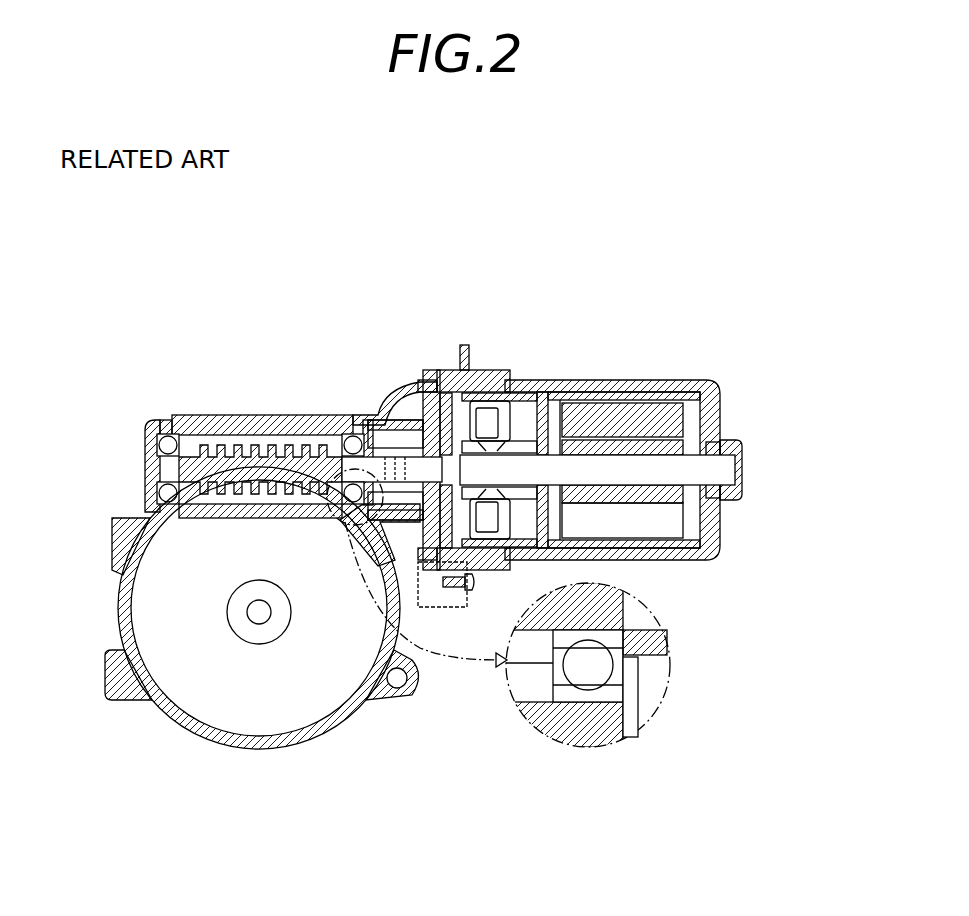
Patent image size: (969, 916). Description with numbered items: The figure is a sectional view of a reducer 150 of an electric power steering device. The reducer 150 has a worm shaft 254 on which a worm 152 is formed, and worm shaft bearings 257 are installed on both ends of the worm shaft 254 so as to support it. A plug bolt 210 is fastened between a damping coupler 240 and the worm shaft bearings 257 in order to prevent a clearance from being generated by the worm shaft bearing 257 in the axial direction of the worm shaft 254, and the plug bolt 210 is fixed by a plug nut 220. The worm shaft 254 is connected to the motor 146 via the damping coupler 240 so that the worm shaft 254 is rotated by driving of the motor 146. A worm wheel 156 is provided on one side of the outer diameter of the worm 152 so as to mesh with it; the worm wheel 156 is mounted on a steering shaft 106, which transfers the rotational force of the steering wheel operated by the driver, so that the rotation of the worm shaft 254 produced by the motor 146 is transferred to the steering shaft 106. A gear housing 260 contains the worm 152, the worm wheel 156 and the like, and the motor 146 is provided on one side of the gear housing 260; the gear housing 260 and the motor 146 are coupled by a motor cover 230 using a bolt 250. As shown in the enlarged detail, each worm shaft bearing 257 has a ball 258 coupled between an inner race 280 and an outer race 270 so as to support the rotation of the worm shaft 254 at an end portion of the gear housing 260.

The steering shaft 106 is at (258, 613).
The motor 146 is at (583, 380).
The reducer 150 is at (449, 317).
The worm 152 is at (215, 445).
The worm wheel 156 is at (315, 706).
The plug bolt 210 is at (385, 408).
The plug nut 220 is at (412, 385).
The motor cover 230 is at (478, 370).
The damping coupler 240 is at (432, 595).
The bolt 250 is at (478, 585).
The worm shaft 254 is at (150, 480).
The worm shaft bearing 257 is at (167, 436).
The ball 258 is at (600, 668).
The gear housing 260 is at (256, 415).
The outer race 270 is at (615, 700).
The inner race 280 is at (618, 640).